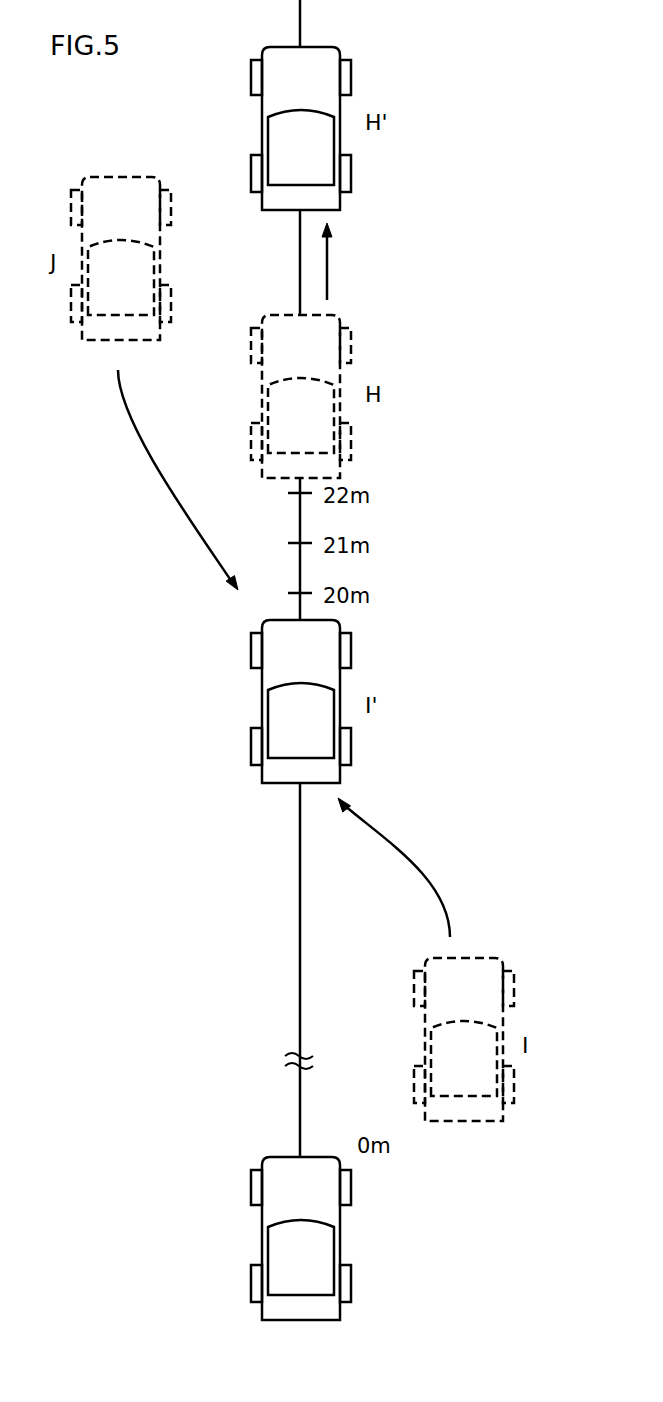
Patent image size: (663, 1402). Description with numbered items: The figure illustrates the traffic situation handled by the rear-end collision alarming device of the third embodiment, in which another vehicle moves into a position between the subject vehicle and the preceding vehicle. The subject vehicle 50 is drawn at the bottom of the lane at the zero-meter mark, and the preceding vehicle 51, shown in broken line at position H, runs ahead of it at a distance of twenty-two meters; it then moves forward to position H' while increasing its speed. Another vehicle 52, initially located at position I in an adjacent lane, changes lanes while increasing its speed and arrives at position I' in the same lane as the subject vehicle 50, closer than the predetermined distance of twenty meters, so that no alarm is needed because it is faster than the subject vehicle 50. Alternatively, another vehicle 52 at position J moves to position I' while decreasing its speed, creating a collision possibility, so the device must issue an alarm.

The subject vehicle 50 is at (260, 1158).
The preceding vehicle 51 is at (338, 50).
The another vehicle 52 is at (132, 177).